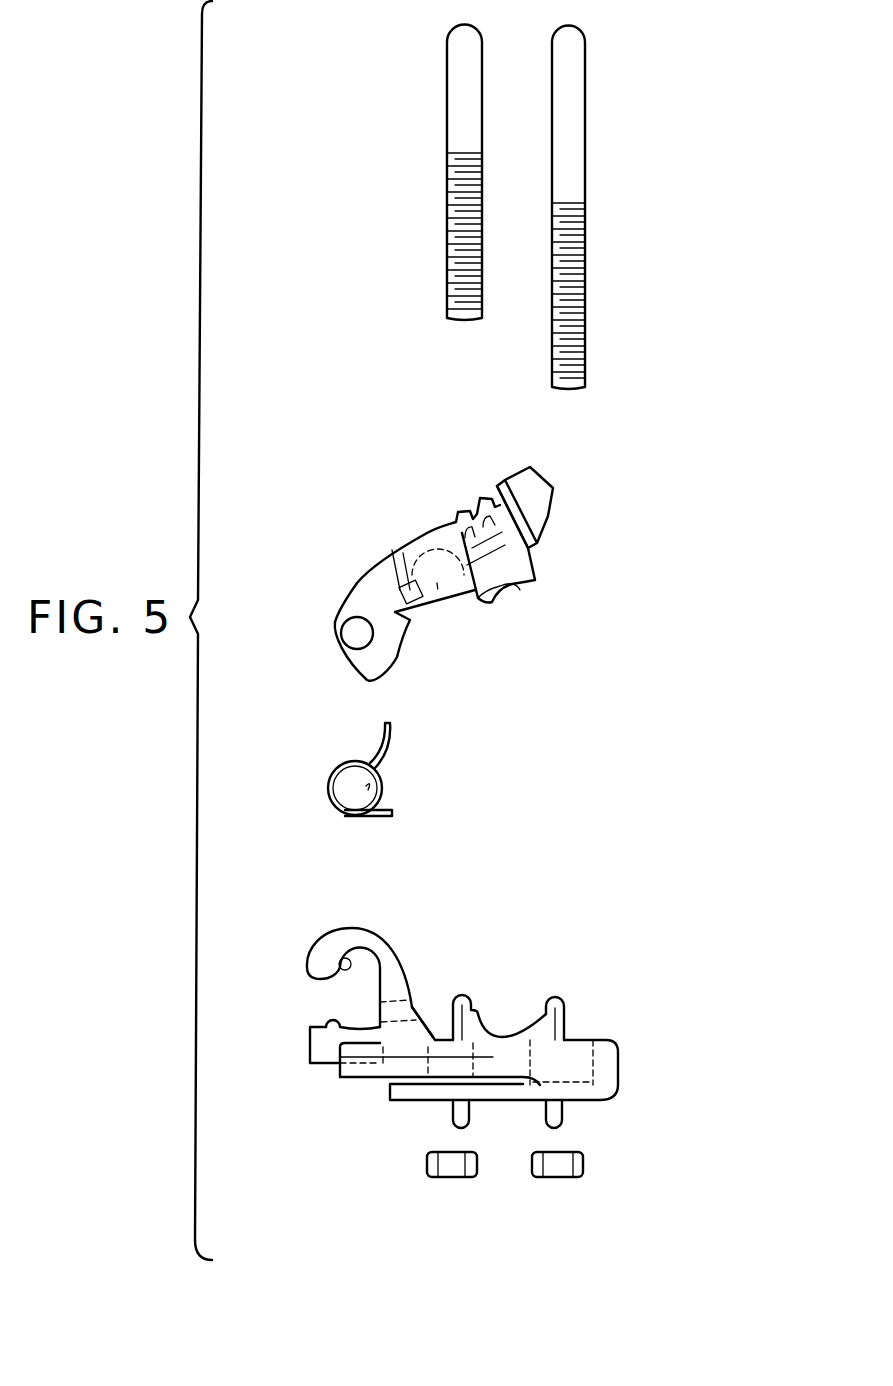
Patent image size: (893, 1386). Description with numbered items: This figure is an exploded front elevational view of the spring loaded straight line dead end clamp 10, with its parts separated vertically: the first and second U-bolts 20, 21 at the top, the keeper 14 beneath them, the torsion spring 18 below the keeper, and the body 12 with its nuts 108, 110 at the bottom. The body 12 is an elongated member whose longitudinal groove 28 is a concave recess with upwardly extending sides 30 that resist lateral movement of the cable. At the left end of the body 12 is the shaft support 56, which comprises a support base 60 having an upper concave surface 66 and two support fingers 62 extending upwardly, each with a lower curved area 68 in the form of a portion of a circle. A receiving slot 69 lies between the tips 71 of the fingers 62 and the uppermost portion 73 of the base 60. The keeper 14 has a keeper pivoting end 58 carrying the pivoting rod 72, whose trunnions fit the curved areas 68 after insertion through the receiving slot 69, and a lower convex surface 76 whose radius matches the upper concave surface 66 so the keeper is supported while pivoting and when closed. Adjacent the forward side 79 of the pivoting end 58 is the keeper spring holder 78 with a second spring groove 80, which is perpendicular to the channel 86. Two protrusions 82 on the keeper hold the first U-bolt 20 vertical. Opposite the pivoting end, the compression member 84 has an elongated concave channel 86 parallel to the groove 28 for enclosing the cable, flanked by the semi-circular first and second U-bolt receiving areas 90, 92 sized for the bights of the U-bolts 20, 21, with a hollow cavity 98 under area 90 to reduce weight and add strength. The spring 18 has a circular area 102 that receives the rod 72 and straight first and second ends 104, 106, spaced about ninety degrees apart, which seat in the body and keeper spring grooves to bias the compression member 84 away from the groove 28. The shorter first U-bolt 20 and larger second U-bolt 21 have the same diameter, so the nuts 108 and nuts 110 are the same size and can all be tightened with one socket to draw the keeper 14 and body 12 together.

The spring loaded straight line dead end clamp 10 is at (760, 185).
The body 12 is at (473, 1008).
The keeper 14 is at (441, 564).
The torsion spring 18 is at (398, 794).
The first U-bolt 20 is at (447, 95).
The second U-bolt 21 is at (585, 95).
The longitudinal groove 28 is at (502, 1037).
The sides 30 is at (477, 1017).
The shaft support 56 is at (298, 997).
The keeper pivoting end 58 is at (326, 604).
The support base 60 is at (306, 1060).
The support fingers 62 is at (387, 942).
The upper concave surface 66 is at (322, 1066).
The lower curved area 68 is at (328, 960).
The receiving slot 69 is at (330, 994).
The tips 71 is at (307, 977).
The pivoting rod 72 is at (355, 633).
The uppermost portion 73 is at (307, 1025).
The lower convex surface 76 is at (393, 677).
The keeper spring holder 78 is at (362, 665).
The forward side 79 is at (355, 600).
The second spring groove 80 is at (413, 647).
The protrusions 82 is at (392, 597).
The compression member 84 is at (540, 550).
The elongated channel 86 is at (517, 592).
The first U-bolt receiving area 90 is at (440, 518).
The second U-bolt receiving area 92 is at (520, 472).
The hollow cavity 98 is at (458, 618).
The circular area 102 is at (367, 788).
The first spring end 104 is at (383, 817).
The second spring end 106 is at (392, 730).
The nuts 108 is at (427, 1163).
The nuts 110 is at (585, 1165).